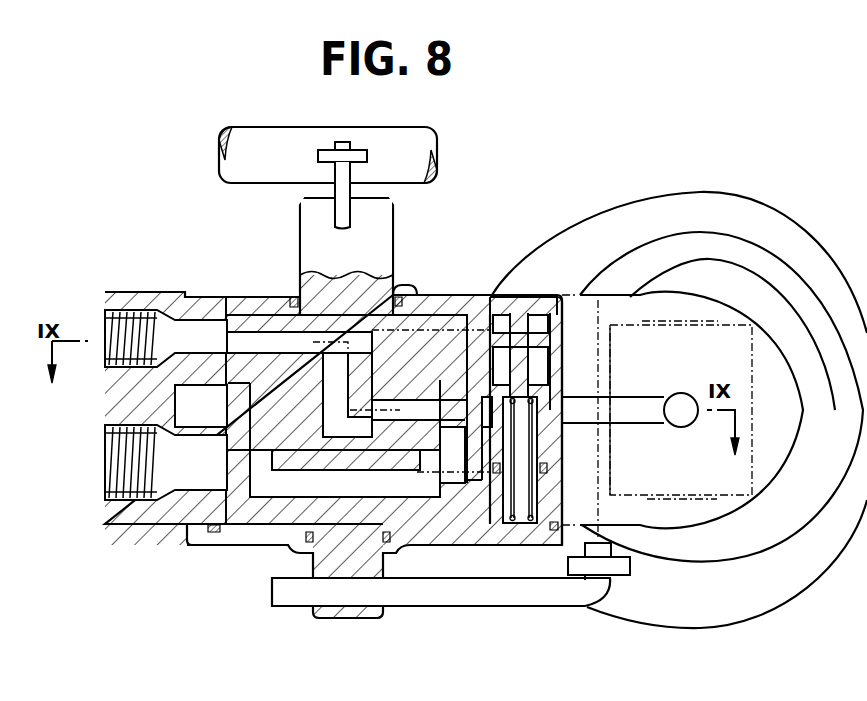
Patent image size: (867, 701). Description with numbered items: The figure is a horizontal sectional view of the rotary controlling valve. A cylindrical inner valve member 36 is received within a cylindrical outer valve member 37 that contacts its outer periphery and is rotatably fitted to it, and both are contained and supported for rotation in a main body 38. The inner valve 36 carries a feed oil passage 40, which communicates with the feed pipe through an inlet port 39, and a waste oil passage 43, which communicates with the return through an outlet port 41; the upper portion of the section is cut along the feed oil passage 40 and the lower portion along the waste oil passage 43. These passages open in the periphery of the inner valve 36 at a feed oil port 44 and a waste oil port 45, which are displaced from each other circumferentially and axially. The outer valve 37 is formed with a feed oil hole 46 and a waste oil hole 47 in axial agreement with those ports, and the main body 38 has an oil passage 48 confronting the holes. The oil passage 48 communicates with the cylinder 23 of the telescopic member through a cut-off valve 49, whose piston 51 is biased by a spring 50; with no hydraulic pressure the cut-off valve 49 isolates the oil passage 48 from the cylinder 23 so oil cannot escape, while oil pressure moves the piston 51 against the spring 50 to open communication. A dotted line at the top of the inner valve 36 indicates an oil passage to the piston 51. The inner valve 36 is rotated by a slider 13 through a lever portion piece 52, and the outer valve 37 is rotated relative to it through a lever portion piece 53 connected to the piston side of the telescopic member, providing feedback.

The slider 13 is at (275, 138).
The cylinder 23 is at (690, 272).
The inner valve member 36 is at (413, 337).
The outer valve member 37 is at (505, 310).
The main body 38 is at (527, 303).
The inlet port 39 is at (105, 333).
The feed oil passage 40 is at (258, 337).
The outlet port 41 is at (112, 458).
The waste oil passage 43 is at (285, 493).
The feed oil port 44 is at (430, 403).
The waste oil port 45 is at (430, 467).
The feed oil hole 46 is at (452, 405).
The waste oil hole 47 is at (450, 480).
The oil passage 48 is at (483, 497).
The cut-off valve 49 is at (553, 377).
The spring 50 is at (535, 500).
The piston 51 is at (545, 313).
The lever portion piece 52 is at (338, 190).
The lever portion piece 53 is at (563, 600).